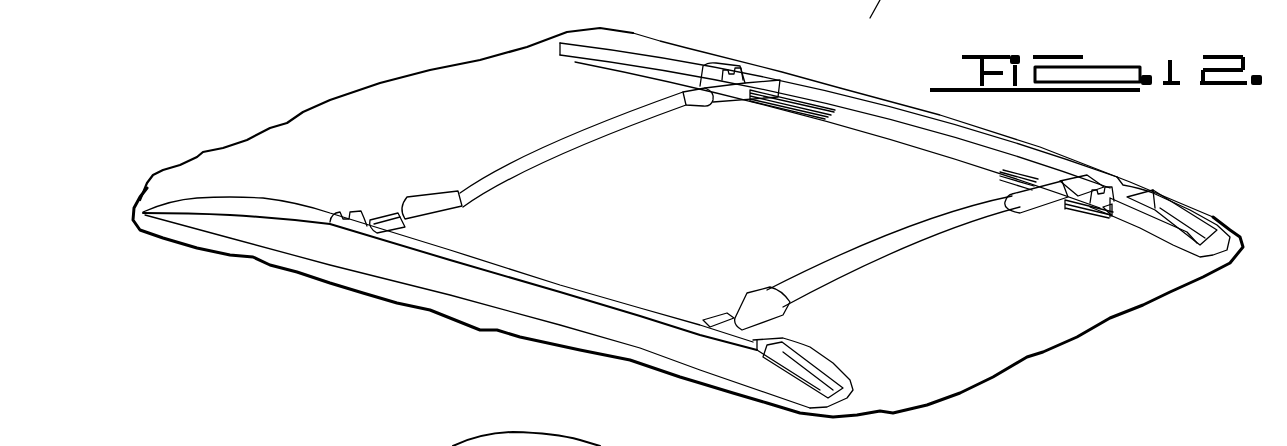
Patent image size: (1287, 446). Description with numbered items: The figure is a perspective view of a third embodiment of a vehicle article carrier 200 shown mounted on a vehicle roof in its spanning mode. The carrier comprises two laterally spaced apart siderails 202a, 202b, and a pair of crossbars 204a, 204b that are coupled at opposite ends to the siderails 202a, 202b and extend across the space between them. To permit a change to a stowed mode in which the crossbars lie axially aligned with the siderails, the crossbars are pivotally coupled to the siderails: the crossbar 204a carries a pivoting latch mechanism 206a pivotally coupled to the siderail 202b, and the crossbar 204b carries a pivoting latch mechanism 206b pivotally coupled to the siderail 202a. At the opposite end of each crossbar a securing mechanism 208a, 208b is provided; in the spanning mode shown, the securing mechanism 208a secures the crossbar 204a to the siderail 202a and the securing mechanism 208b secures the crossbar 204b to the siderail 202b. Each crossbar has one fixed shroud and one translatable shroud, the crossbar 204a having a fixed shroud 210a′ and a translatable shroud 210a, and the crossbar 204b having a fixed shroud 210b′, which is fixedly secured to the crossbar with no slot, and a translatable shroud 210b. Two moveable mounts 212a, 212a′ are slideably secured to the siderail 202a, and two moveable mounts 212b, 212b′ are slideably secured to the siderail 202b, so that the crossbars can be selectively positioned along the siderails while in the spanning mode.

The vehicle article carrier 200 is at (270, 115).
The siderail 202a is at (572, 300).
The siderail 202b is at (1030, 143).
The crossbar 204a is at (540, 148).
The crossbar 204b is at (937, 230).
The pivoting latch mechanism 206a is at (772, 72).
The pivoting latch mechanism 206b is at (713, 327).
The securing mechanism 208a is at (388, 216).
The securing mechanism 208b is at (1090, 175).
The translatable shroud 210a is at (446, 216).
The fixed shroud 210a′ is at (713, 108).
The translatable shroud 210b is at (1053, 200).
The fixed shroud 210b′ is at (744, 295).
The moveable mount 212a is at (788, 317).
The moveable mount 212a′ is at (350, 216).
The moveable mount 212b is at (1100, 200).
The moveable mount 212b′ is at (732, 72).